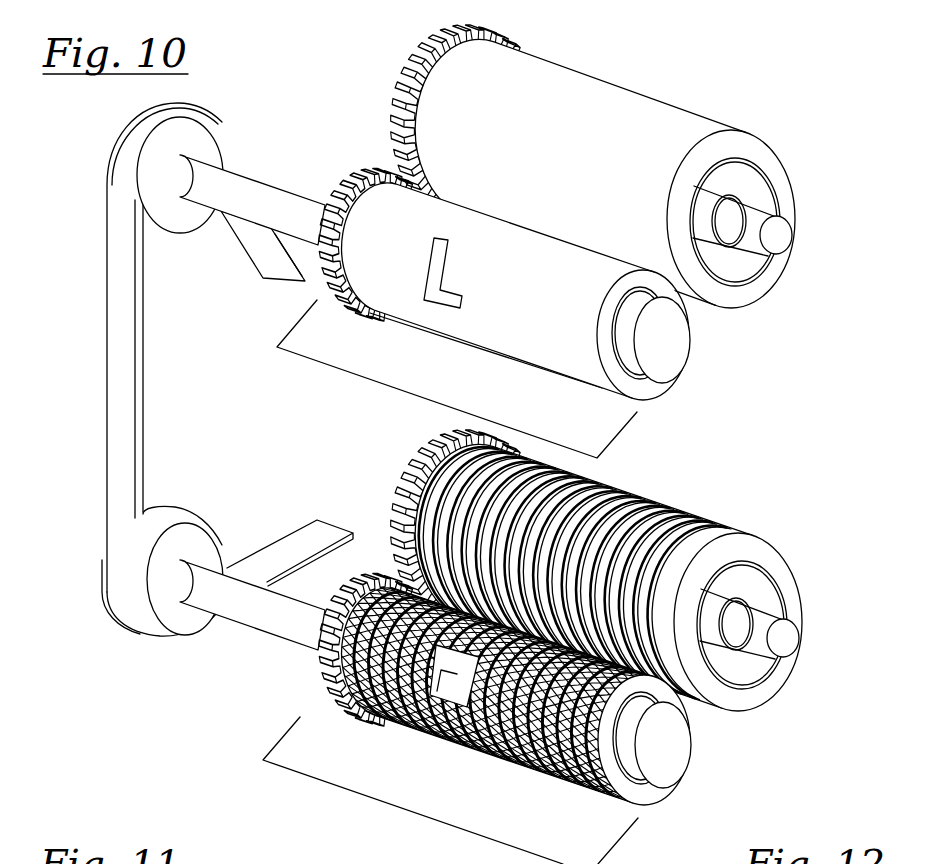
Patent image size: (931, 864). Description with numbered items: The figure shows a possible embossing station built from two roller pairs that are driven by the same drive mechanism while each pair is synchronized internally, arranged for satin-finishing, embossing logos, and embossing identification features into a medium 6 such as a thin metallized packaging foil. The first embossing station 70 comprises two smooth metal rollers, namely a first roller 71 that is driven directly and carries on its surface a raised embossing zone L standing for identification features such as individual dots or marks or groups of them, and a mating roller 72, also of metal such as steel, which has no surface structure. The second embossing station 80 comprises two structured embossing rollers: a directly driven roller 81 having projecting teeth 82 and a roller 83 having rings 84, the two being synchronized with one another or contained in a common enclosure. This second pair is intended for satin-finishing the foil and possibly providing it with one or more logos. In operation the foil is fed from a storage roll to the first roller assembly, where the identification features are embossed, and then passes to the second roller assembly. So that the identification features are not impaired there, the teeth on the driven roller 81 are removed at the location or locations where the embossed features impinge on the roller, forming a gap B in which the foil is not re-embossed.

The medium 6 is at (517, 203).
The first embossing station 70 is at (435, 402).
The first roller 71 is at (400, 220).
The mating roller 72 is at (688, 100).
The second embossing station 80 is at (423, 818).
The driven roller 81 is at (493, 633).
The projecting teeth 82 is at (493, 672).
The roller having rings 83 is at (610, 557).
The rings 84 is at (658, 500).
The gap B is at (413, 730).